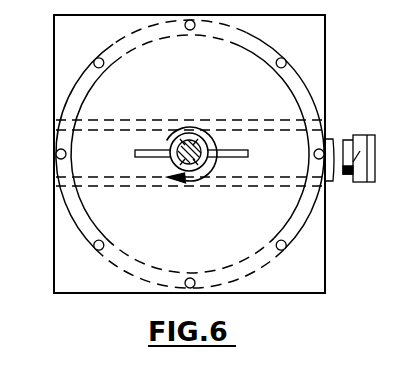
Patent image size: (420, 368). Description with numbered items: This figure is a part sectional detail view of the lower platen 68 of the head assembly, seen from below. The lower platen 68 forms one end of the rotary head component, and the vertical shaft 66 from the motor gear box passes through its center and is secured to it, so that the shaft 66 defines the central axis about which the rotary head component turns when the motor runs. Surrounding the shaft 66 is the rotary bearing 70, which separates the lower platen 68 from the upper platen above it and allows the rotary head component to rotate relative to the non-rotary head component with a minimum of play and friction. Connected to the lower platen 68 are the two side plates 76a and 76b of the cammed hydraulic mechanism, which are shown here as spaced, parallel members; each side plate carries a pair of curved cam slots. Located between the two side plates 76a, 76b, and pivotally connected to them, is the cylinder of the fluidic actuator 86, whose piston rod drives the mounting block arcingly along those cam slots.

The vertical shaft 66 is at (178, 160).
The lower platen 68 is at (118, 294).
The rotary bearing 70 is at (90, 244).
The side plate 76a is at (266, 190).
The side plate 76b is at (238, 121).
The fluidic actuator 86 is at (346, 137).